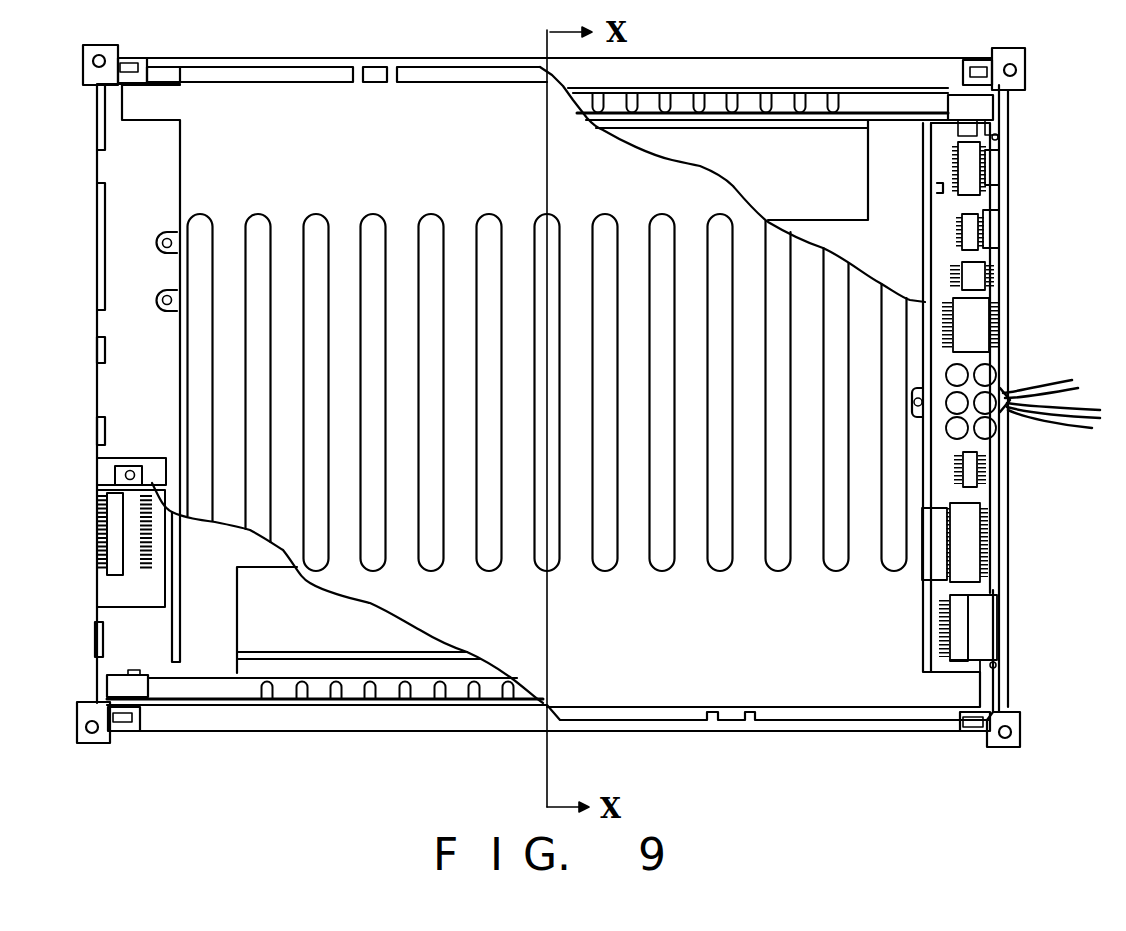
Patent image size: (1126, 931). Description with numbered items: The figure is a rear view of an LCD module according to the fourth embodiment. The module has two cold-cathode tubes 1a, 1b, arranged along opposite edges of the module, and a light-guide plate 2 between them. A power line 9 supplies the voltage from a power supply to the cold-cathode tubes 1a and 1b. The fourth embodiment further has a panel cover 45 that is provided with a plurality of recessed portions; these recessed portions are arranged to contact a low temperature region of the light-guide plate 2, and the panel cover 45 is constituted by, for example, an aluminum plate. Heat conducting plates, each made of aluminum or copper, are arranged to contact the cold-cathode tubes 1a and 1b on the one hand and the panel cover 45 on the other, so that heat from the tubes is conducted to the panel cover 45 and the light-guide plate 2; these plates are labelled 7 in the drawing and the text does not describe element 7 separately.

The cold-cathode tube 1a is at (188, 686).
The cold-cathode tube 1b is at (930, 108).
The light-guide plate 2 is at (208, 573).
The cover plate 7 is at (785, 142).
The power line 9 is at (1040, 413).
The panel cover 45 is at (777, 668).